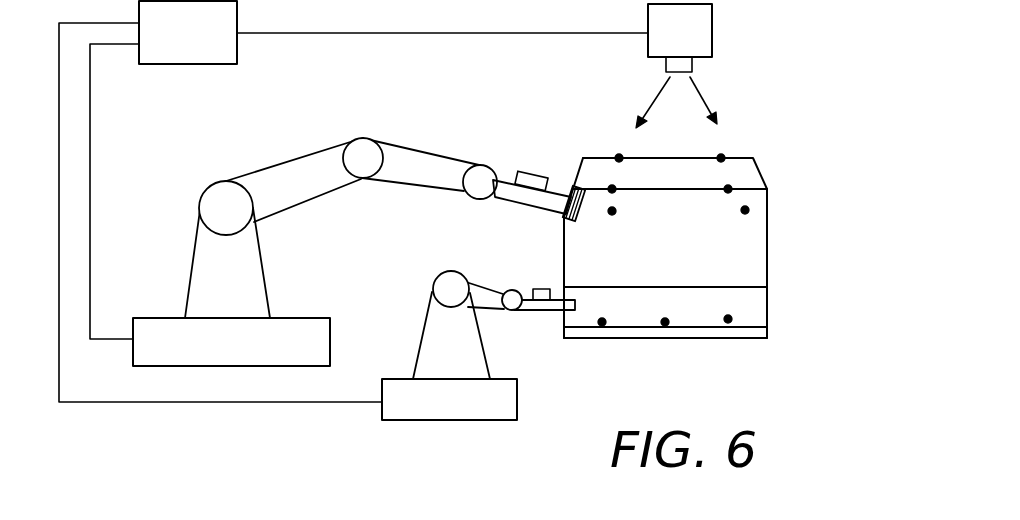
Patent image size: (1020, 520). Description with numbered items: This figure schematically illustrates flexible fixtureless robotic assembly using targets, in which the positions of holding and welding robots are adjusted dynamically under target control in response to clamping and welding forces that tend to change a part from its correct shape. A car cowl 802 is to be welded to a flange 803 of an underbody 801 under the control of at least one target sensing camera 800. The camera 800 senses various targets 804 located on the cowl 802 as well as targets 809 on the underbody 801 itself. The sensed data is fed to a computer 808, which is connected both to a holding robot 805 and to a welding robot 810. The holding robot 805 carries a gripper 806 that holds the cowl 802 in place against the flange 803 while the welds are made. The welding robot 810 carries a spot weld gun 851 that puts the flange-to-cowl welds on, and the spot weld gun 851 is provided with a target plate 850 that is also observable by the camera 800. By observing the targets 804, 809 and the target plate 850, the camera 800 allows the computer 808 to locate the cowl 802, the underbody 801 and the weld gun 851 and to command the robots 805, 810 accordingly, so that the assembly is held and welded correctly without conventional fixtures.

The target sensing camera 800 is at (695, 44).
The underbody 801 is at (755, 332).
The car cowl 802 is at (768, 231).
The flange 803 is at (769, 298).
The targets 804 is at (729, 188).
The holding robot 805 is at (197, 272).
The gripper 806 is at (585, 213).
The computer 808 is at (216, 49).
The targets 809 is at (724, 318).
The welding robot 810 is at (382, 404).
The target plate 850 is at (541, 289).
The spot weld gun 851 is at (518, 171).